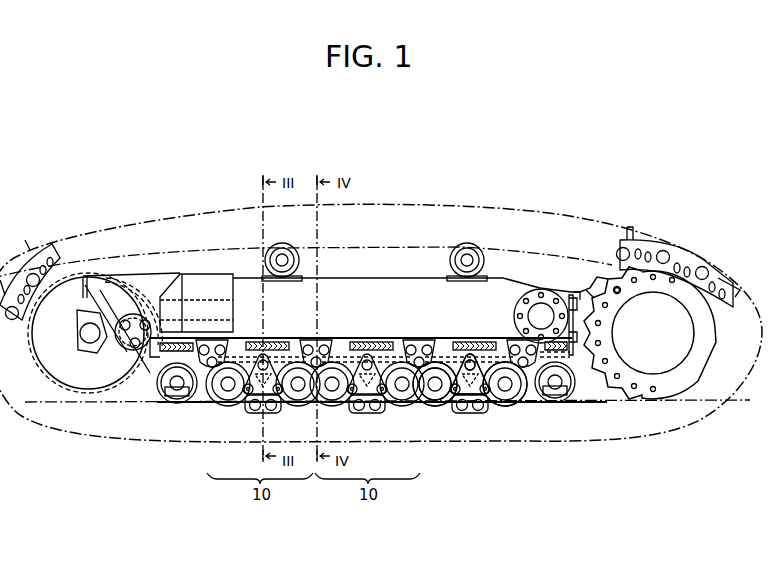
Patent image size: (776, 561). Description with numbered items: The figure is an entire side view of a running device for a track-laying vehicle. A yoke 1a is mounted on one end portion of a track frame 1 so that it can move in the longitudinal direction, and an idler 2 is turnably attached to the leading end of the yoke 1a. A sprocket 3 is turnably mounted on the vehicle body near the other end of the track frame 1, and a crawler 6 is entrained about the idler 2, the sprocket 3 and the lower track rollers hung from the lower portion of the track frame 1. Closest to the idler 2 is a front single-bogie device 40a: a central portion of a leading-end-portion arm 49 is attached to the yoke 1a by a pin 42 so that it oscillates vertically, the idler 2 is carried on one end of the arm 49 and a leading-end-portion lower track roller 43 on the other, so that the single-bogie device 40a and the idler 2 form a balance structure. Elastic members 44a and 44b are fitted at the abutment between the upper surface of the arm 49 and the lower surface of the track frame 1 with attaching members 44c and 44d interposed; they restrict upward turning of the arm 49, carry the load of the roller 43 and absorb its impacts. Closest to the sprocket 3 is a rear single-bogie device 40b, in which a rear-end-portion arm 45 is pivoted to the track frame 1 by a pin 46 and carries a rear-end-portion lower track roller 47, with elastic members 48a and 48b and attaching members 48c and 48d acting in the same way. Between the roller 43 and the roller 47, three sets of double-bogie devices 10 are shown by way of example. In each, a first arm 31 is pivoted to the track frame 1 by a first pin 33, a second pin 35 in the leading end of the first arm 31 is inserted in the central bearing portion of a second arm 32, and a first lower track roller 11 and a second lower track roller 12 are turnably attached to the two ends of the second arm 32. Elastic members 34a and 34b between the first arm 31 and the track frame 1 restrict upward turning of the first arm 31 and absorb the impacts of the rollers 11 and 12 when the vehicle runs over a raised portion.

The track frame 1 is at (377, 292).
The yoke 1a is at (140, 310).
The idler 2 is at (62, 394).
The sprocket 3 is at (643, 385).
The crawler 6 is at (660, 262).
The double-bogie device 10 is at (413, 496).
The first lower track roller 11 is at (455, 407).
The second lower track roller 12 is at (497, 407).
The first arm 31 is at (430, 408).
The second arm 32 is at (508, 407).
The first pin 33 is at (437, 406).
The elastic member 34a is at (442, 345).
The elastic member 34b is at (495, 338).
The second pin 35 is at (448, 375).
The single-bogie device 40a is at (198, 470).
The single-bogie device 40b is at (627, 498).
The pin 42 is at (116, 352).
The leading-end-portion lower track roller 43 is at (188, 395).
The elastic member 44a is at (148, 330).
The elastic member 44b is at (184, 340).
The attaching member 44c is at (212, 340).
The attaching member 44d is at (168, 340).
The rear-end-portion arm 45 is at (565, 405).
The pin 46 is at (525, 405).
The rear-end-portion lower track roller 47 is at (586, 405).
The elastic member 48a is at (590, 298).
The elastic member 48b is at (574, 294).
The attaching member 48c is at (632, 298).
The attaching member 48d is at (568, 296).
The leading-end-portion arm 49 is at (140, 350).